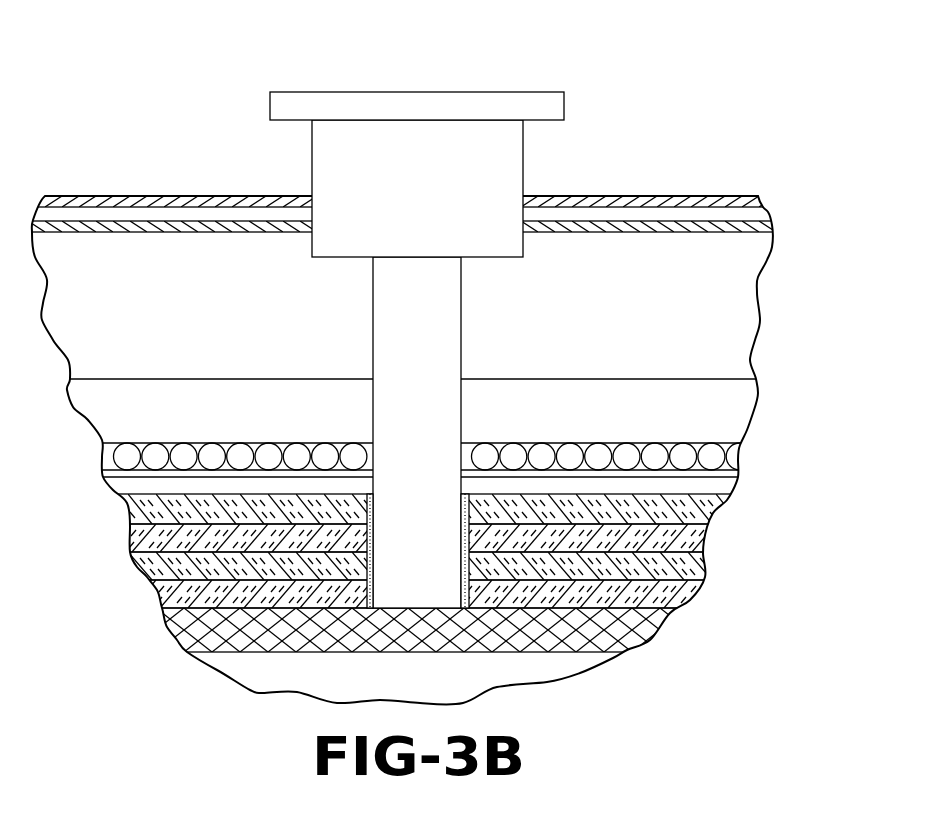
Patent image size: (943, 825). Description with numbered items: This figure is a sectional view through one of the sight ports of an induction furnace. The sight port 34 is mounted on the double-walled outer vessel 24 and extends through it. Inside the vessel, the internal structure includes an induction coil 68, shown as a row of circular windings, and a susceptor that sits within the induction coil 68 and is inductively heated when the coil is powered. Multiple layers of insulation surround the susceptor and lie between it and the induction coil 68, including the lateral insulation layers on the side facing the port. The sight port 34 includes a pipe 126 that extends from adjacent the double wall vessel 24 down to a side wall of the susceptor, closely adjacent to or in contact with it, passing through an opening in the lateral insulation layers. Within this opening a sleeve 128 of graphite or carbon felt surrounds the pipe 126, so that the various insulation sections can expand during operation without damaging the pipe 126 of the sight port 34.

The sight port 34 is at (476, 84).
The double-walled outer vessel 24 is at (657, 186).
The pipe 126 is at (438, 322).
The induction coil 68 is at (627, 434).
The sleeve 128 is at (367, 535).